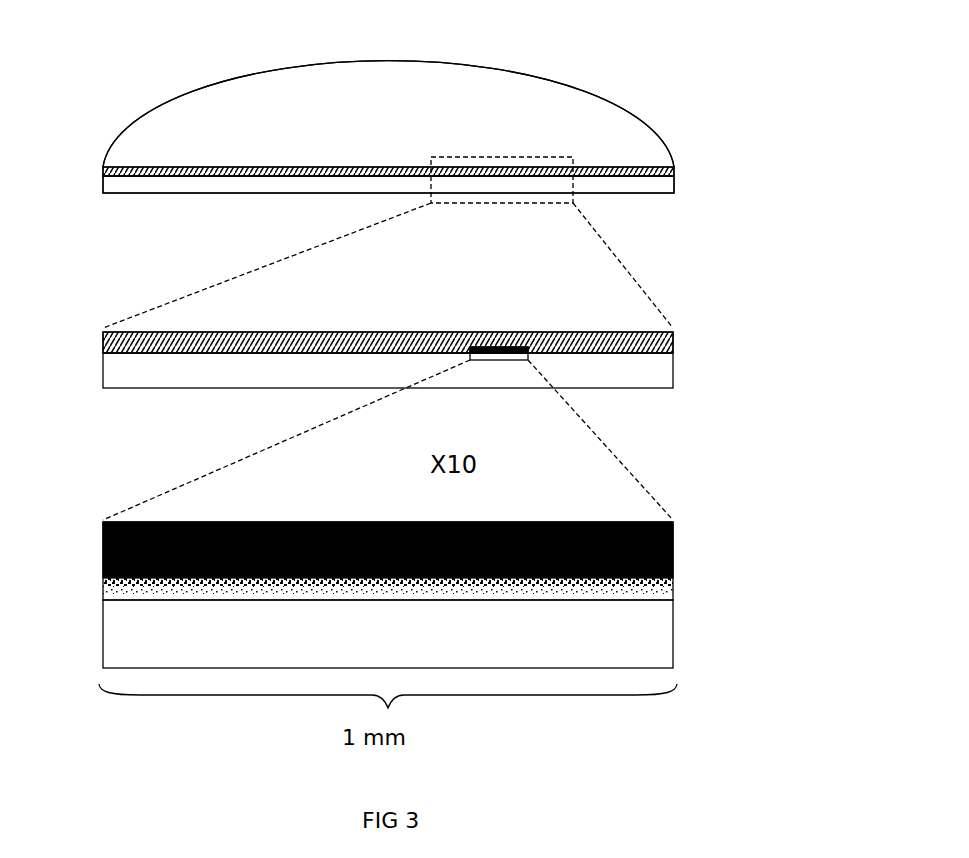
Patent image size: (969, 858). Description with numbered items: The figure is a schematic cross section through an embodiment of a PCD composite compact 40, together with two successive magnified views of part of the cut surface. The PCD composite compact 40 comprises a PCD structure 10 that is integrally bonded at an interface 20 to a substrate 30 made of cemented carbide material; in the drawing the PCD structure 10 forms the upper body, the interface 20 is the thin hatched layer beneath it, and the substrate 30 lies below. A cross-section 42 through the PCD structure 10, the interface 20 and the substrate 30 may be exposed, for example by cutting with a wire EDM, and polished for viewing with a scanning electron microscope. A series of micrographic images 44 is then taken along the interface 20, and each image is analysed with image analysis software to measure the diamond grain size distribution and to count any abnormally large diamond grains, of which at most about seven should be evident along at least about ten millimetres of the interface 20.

The PCD composite compact 40 is at (104, 114).
The PCD structure 10 is at (632, 140).
The interface 20 is at (675, 177).
The substrate 30 is at (627, 185).
The cross-section 42 is at (522, 184).
The micrographic images 44 is at (528, 355).